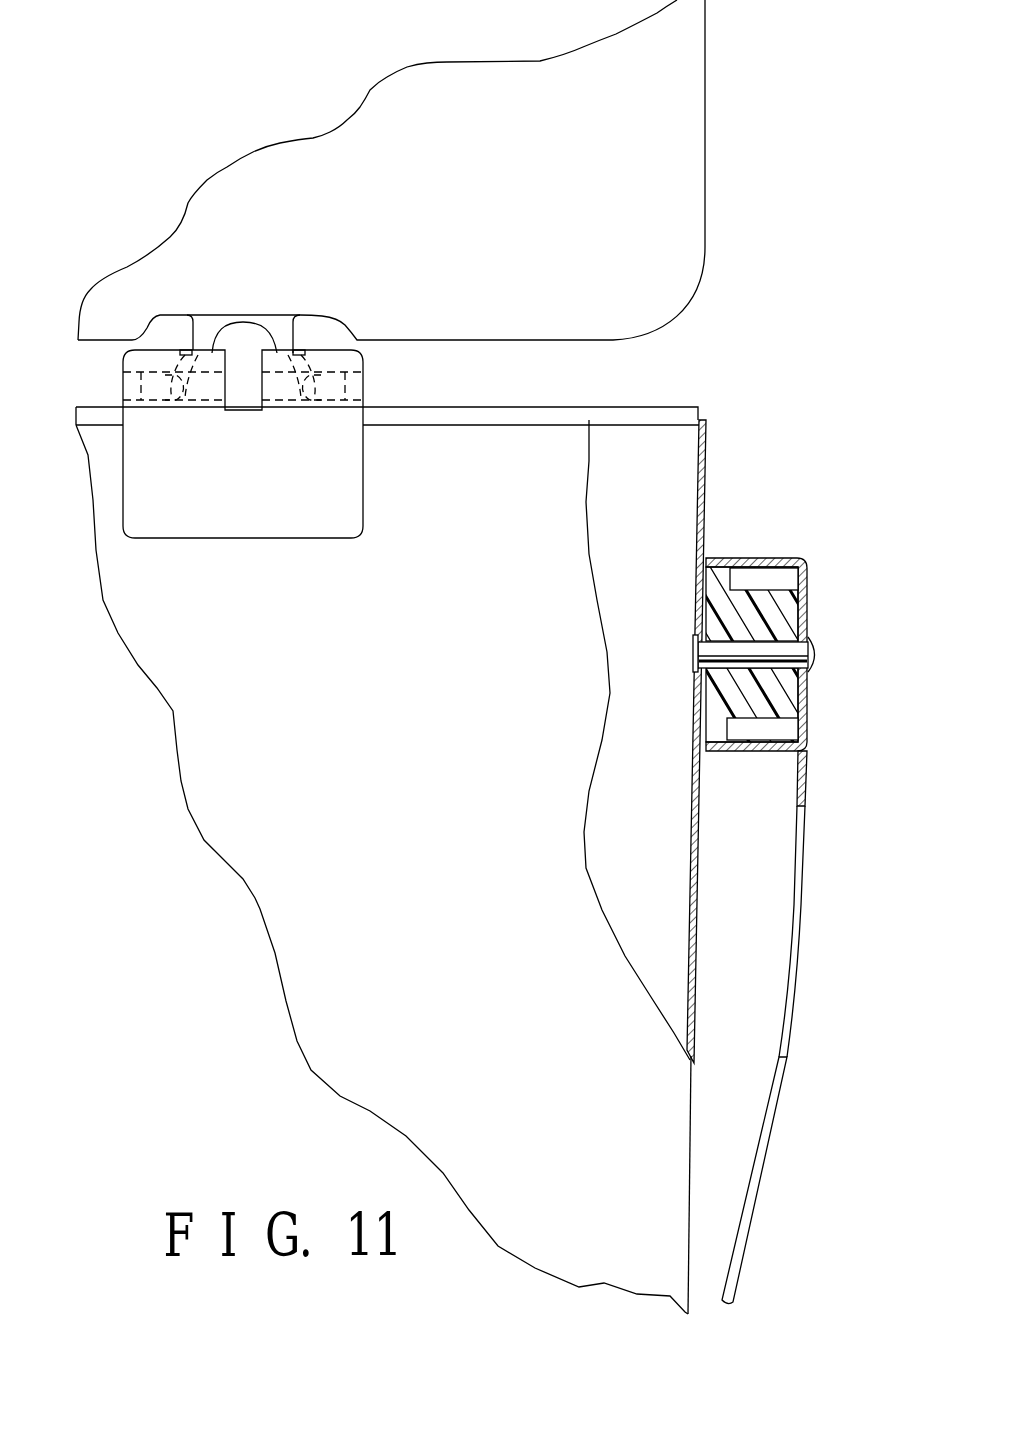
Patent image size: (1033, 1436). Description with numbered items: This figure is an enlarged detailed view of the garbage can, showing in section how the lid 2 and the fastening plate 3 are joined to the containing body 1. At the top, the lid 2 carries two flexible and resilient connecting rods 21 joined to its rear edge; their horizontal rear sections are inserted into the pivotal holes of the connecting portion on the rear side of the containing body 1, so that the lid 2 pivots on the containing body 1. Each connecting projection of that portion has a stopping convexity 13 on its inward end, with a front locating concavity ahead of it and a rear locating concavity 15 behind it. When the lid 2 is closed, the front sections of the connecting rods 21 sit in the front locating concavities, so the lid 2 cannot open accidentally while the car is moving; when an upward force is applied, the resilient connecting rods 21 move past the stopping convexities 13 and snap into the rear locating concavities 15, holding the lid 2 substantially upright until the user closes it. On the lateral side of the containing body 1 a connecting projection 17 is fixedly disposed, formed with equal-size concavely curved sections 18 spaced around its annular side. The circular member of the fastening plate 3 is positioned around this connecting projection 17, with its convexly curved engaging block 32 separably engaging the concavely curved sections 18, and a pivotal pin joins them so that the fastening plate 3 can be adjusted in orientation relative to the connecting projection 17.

The containing body 1 is at (680, 503).
The lid 2 is at (678, 162).
The fastening plate 3 is at (810, 846).
The stopping convexity 13 is at (183, 353).
The rear locating concavity 15 is at (180, 372).
The connecting projection 17 is at (760, 623).
The concavely curved sections 18 is at (770, 602).
The connecting rods 21 is at (192, 372).
The engaging block 32 is at (783, 592).